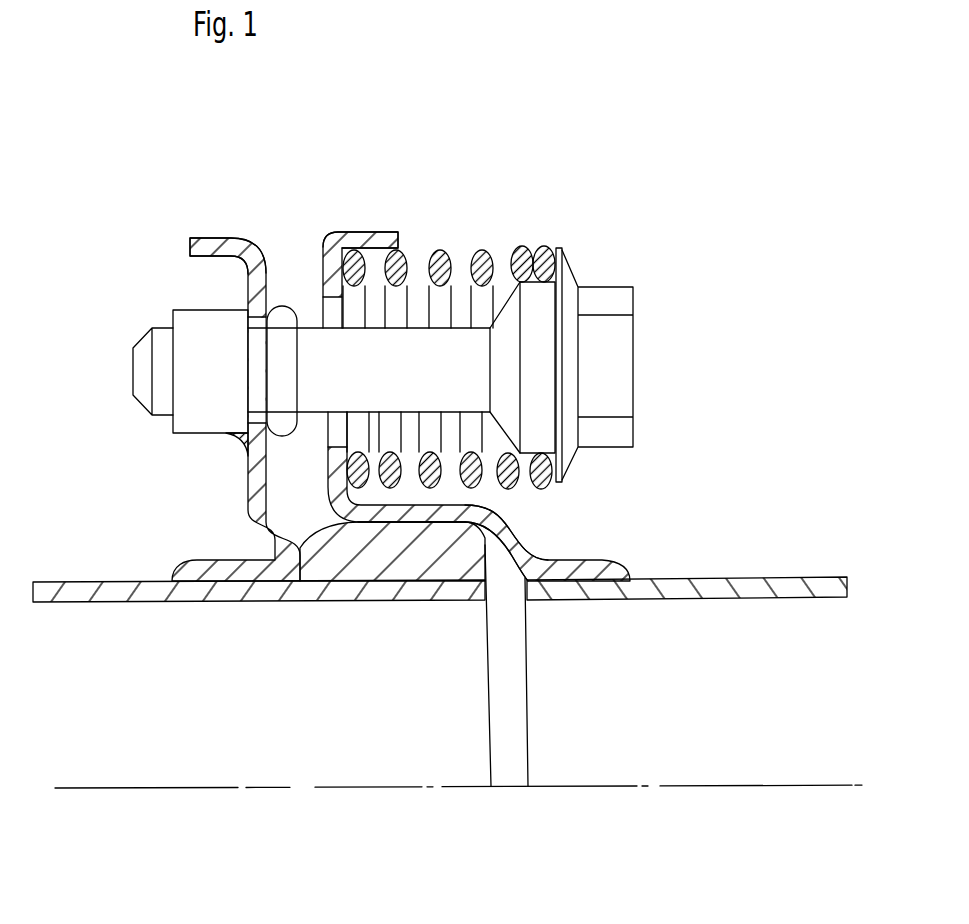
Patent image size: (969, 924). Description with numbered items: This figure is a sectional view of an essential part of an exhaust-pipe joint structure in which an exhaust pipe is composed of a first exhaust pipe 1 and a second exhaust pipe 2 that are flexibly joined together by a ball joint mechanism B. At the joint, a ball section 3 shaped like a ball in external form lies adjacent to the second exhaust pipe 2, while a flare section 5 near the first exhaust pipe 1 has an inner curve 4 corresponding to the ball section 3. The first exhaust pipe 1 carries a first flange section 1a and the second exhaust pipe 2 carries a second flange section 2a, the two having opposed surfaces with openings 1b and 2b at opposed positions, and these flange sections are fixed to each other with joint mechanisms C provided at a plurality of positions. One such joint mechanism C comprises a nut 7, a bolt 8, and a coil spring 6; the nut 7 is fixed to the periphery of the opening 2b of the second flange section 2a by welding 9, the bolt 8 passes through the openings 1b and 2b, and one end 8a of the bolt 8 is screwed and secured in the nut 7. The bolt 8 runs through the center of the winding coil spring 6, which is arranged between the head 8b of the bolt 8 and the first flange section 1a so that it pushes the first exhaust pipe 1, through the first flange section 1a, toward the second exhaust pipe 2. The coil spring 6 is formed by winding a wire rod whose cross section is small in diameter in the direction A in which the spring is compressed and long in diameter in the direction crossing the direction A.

The first exhaust pipe 1 is at (728, 578).
The first flange section 1a is at (372, 232).
The opening 1b is at (327, 312).
The second exhaust pipe 2 is at (55, 581).
The second flange section 2a is at (208, 237).
The opening 2b is at (281, 305).
The ball section 3 is at (396, 567).
The inner curve 4 is at (428, 523).
The flare section 5 is at (507, 540).
The coil spring 6 is at (482, 252).
The nut 7 is at (195, 425).
The bolt 8 is at (407, 391).
The one end of the bolt 8a is at (138, 376).
The head of the bolt 8b is at (600, 284).
The welding 9 is at (236, 455).
The direction A is at (482, 221).
The ball joint mechanism B is at (352, 614).
The joint mechanism C is at (466, 171).